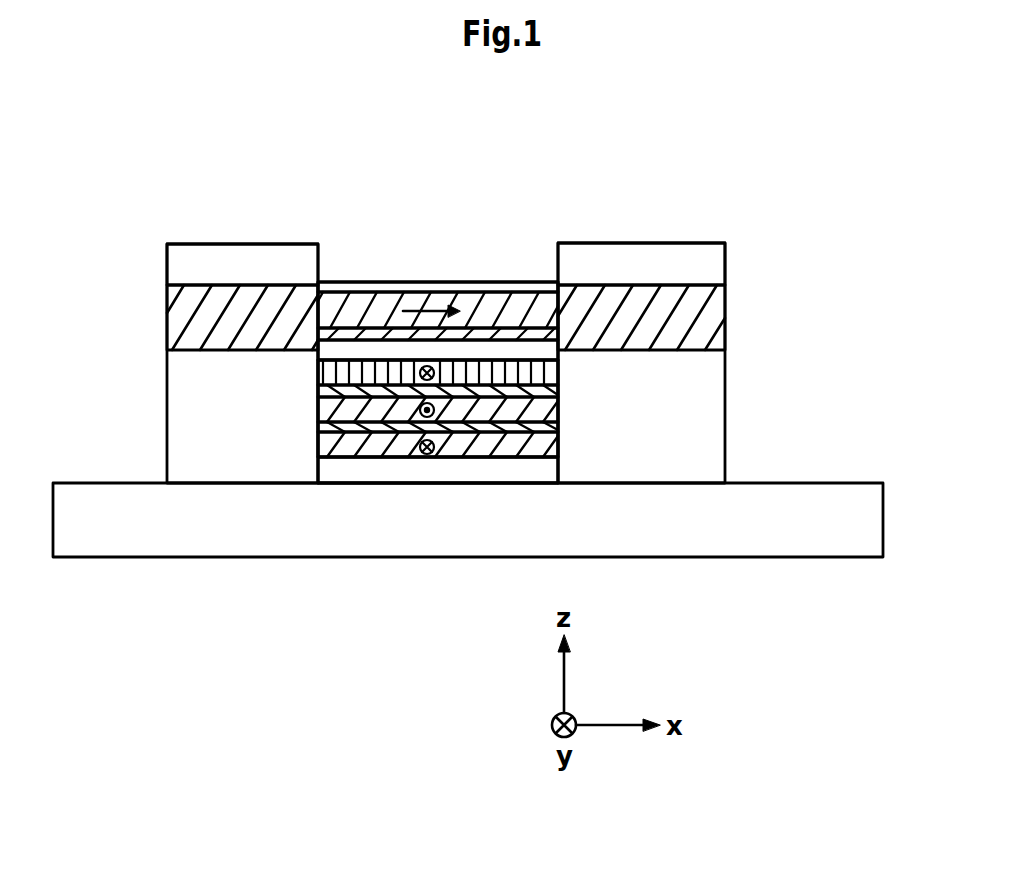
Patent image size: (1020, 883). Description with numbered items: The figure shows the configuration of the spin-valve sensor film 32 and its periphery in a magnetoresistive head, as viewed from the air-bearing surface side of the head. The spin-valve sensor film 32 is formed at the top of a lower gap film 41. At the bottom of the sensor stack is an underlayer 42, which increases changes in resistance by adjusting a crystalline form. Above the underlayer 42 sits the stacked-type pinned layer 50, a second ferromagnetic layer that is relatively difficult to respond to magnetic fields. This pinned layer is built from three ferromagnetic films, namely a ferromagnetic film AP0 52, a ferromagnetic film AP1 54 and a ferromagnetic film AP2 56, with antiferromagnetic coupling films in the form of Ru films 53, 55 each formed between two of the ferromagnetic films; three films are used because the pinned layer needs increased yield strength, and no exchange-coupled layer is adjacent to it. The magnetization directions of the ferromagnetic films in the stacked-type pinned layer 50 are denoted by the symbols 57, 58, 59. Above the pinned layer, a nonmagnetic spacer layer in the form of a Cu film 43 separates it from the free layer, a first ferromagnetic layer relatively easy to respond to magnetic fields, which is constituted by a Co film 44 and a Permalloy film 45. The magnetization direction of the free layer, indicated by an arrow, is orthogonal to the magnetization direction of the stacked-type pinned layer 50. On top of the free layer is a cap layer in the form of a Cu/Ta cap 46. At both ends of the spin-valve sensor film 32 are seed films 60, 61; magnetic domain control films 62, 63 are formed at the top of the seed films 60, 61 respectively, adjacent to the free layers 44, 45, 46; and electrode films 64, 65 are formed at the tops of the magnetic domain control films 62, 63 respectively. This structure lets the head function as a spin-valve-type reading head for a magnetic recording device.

The spin-valve sensor film 32 is at (452, 266).
The lower gap film 41 is at (405, 526).
The underlayer 42 is at (388, 472).
The Cu film 43 is at (560, 352).
The Co film 44 is at (343, 333).
The Permalloy film 45 is at (410, 302).
The Cu/Ta cap 46 is at (504, 286).
The stacked-type pinned layer 50 is at (563, 359).
The ferromagnetic film AP0 52 is at (320, 447).
The Ru film 53 is at (320, 428).
The ferromagnetic film AP1 54 is at (320, 409).
The Ru film 55 is at (320, 390).
The ferromagnetic film AP2 56 is at (320, 372).
The magnetization direction 57 is at (437, 450).
The magnetization direction 58 is at (436, 413).
The magnetization direction 59 is at (436, 379).
The seed film 60 is at (185, 383).
The seed film 61 is at (708, 444).
The magnetic domain control film 62 is at (185, 318).
The magnetic domain control film 63 is at (705, 330).
The electrode film 64 is at (185, 262).
The electrode film 65 is at (622, 262).